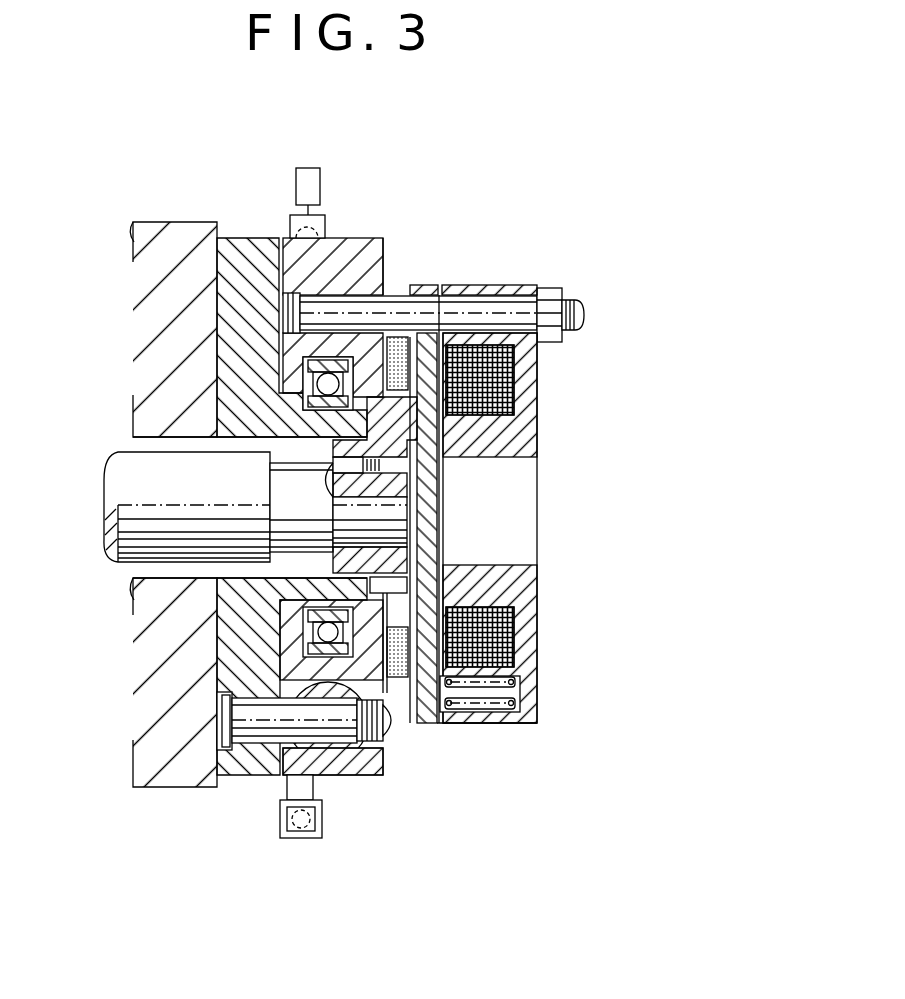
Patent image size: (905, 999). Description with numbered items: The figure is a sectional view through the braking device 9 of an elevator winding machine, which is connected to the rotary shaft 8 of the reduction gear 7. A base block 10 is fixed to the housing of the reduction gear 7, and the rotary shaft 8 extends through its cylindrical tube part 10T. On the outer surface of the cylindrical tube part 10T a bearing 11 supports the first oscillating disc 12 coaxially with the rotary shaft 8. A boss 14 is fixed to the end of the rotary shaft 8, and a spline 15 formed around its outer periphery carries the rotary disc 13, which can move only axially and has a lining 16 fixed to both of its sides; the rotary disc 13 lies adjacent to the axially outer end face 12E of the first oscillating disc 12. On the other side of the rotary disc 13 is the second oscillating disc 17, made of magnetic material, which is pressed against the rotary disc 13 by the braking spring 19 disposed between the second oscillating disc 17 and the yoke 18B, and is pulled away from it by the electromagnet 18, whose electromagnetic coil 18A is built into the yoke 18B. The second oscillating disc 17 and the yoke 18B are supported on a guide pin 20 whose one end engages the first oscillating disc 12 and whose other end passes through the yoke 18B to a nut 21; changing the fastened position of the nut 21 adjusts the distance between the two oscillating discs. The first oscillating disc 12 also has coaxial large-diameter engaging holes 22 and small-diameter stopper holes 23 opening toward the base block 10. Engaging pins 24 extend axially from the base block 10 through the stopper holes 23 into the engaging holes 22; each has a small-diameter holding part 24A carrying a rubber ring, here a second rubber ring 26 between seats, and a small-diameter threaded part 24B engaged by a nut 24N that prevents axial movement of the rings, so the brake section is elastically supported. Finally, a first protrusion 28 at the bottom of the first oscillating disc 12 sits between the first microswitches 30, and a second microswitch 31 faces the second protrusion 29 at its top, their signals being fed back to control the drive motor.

The reduction gear 7 is at (166, 789).
The rotary shaft 8 is at (107, 477).
The braking device 9 is at (670, 517).
The base block 10 is at (230, 777).
The cylindrical tube part 10T is at (300, 576).
The bearing 11 is at (295, 380).
The first oscillating disc 12 is at (375, 238).
The axially outer end face 12E is at (390, 285).
The rotary disc 13 is at (446, 433).
The boss 14 is at (403, 553).
The spline 15 is at (320, 462).
The lining 16 is at (400, 723).
The second oscillating disc 17 is at (420, 285).
The electromagnet 18 is at (643, 590).
The electromagnetic coil 18A is at (513, 618).
The yoke 18B is at (530, 658).
The braking spring 19 is at (520, 703).
The guide pin 20 is at (345, 298).
The nut 21 is at (547, 287).
The engaging hole 22 is at (387, 757).
The stopper hole 23 is at (282, 668).
The engaging pin 24 is at (232, 723).
The small-diameter holding part 24A is at (262, 775).
The small-diameter threaded part 24B is at (387, 733).
The nut 24N is at (393, 737).
The second rubber ring 26 is at (363, 753).
The first protrusion 28 is at (317, 788).
The second protrusion 29 is at (288, 226).
The first microswitches 30 is at (307, 838).
The second microswitch 31 is at (307, 167).